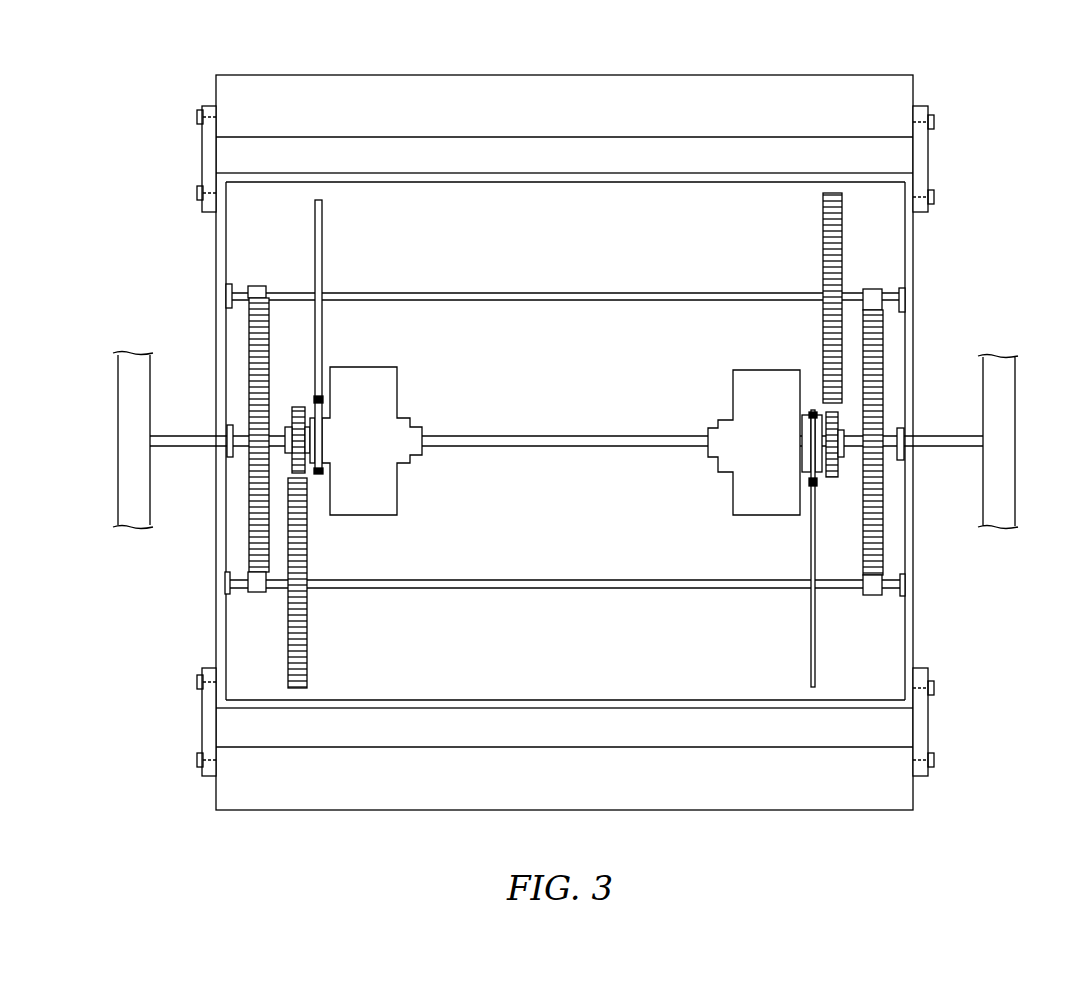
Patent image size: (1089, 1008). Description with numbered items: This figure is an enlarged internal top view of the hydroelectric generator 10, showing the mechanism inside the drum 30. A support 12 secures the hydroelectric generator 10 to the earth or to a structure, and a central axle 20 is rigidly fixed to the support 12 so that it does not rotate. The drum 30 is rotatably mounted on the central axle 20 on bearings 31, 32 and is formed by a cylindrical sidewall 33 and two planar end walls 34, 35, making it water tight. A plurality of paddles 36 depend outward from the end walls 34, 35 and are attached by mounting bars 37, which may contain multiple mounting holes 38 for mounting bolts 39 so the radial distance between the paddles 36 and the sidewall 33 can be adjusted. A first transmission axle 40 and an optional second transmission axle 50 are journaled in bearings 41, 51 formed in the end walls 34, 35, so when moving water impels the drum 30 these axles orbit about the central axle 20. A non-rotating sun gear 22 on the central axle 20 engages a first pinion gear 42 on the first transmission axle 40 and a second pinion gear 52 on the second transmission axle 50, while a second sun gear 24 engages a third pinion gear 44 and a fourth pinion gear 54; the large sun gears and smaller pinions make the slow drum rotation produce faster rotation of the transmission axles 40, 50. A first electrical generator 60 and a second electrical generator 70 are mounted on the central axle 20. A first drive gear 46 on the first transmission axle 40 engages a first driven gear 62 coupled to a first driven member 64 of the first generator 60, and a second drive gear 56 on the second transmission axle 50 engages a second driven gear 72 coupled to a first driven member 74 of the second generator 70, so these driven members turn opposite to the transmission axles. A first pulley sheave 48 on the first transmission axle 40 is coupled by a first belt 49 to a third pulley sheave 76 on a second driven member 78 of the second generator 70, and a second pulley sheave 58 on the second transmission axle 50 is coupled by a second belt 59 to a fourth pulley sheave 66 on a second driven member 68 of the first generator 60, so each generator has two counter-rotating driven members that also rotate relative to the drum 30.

The hydroelectric generator 10 is at (1025, 100).
The support 12 is at (118, 378).
The central axle 20 is at (935, 436).
The sun gear 22 is at (883, 355).
The second sun gear 24 is at (249, 520).
The drum 30 is at (212, 333).
The bearing 31 is at (904, 460).
The bearing 32 is at (230, 458).
The cylindrical sidewall 33 is at (690, 182).
The end wall 34 is at (226, 560).
The end wall 35 is at (905, 563).
The paddle 36 is at (714, 75).
The mounting bar 37 is at (203, 150).
The mounting hole 38 is at (205, 105).
The mounting bolt 39 is at (197, 117).
The first transmission axle 40 is at (575, 293).
The bearing 41 is at (230, 292).
The first pinion gear 42 is at (872, 289).
The third pinion gear 44 is at (258, 286).
The first drive gear 46 is at (842, 215).
The first pulley sheave 48 is at (322, 230).
The first belt 49 is at (320, 402).
The second transmission axle 50 is at (560, 580).
The bearing 51 is at (228, 592).
The second pinion gear 52 is at (872, 595).
The fourth pinion gear 54 is at (257, 592).
The second drive gear 56 is at (288, 655).
The second pulley sheave 58 is at (811, 620).
The second belt 59 is at (808, 482).
The first electrical generator 60 is at (768, 370).
The first driven gear 62 is at (834, 478).
The first driven member 64 is at (843, 450).
The fourth pulley sheave 66 is at (802, 440).
The second driven member 68 is at (813, 412).
The second electrical generator 70 is at (360, 367).
The second driven gear 72 is at (300, 407).
The first driven member 74 is at (288, 430).
The third pulley sheave 76 is at (318, 440).
The second driven member 78 is at (314, 478).